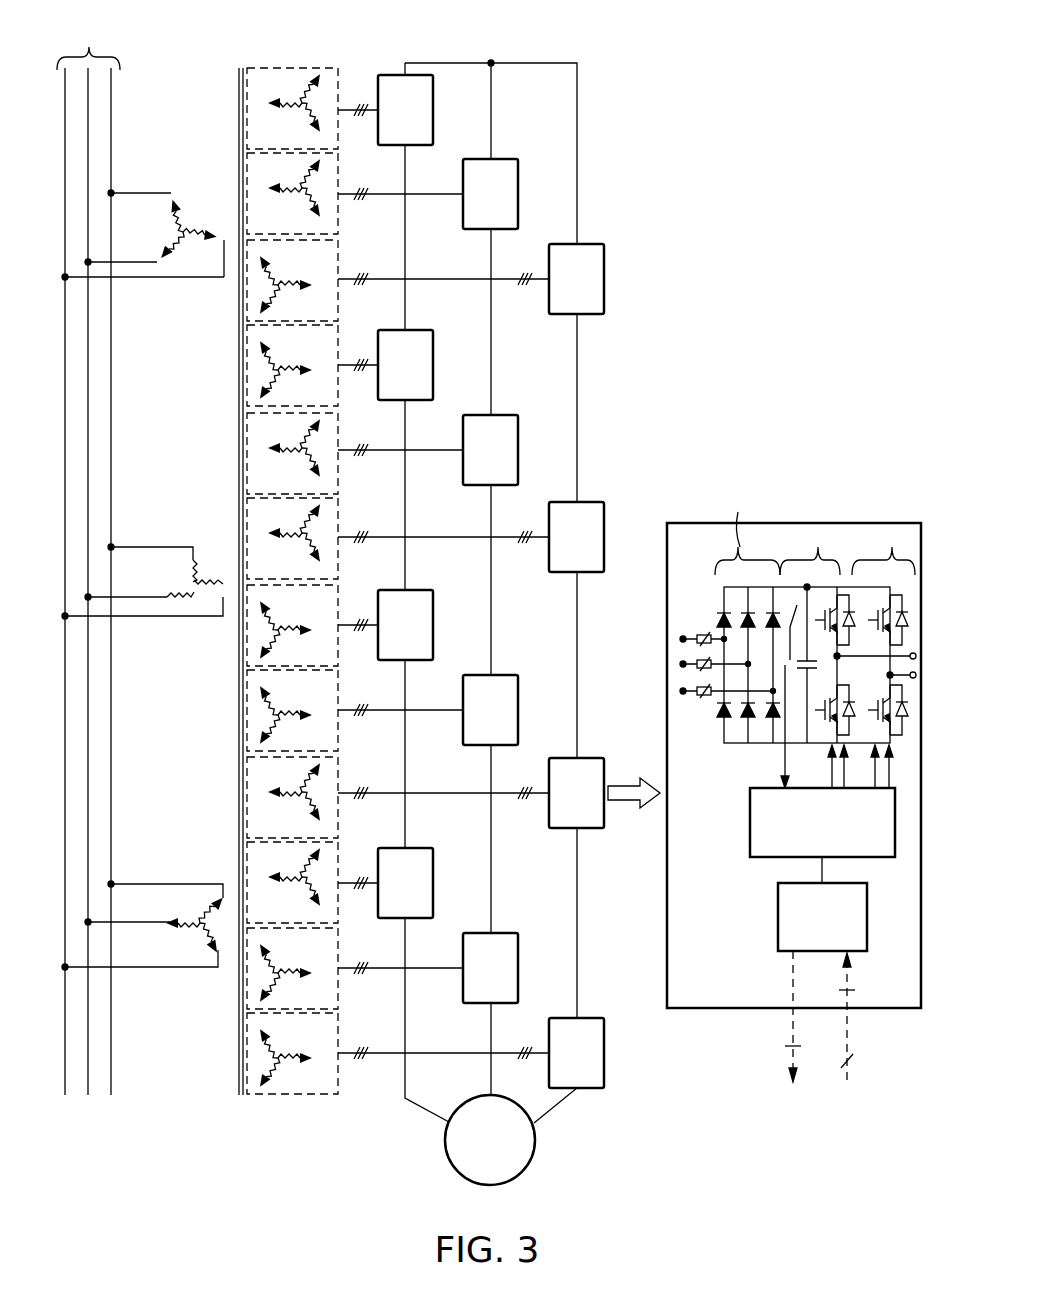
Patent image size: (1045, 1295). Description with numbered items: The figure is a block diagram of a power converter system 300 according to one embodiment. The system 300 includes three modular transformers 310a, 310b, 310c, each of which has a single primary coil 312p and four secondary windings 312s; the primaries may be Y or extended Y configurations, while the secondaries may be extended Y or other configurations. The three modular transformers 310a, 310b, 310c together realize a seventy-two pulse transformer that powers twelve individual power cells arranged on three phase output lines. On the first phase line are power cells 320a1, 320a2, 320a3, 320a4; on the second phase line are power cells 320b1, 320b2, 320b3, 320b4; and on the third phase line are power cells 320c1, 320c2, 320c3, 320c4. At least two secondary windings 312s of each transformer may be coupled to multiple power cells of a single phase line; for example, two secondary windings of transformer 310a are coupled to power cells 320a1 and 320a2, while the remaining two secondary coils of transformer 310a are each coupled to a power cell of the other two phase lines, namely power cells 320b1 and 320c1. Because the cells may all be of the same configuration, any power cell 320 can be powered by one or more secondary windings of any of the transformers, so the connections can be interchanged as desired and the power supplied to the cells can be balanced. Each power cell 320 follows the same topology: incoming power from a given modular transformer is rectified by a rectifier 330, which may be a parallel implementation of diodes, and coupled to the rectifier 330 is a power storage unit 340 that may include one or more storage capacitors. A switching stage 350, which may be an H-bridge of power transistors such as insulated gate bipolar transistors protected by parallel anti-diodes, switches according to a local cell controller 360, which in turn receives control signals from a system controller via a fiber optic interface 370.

The system 300 is at (192, 38).
The modular transformer 310a is at (148, 193).
The modular transformer 310b is at (180, 616).
The modular transformer 310c is at (188, 967).
The primary coil 312p is at (220, 278).
The secondary windings 312s is at (288, 68).
The power cell 320 is at (794, 818).
The power cell 320a1 is at (392, 74).
The power cell 320a2 is at (427, 330).
The power cell 320a3 is at (428, 590).
The power cell 320a4 is at (428, 848).
The power cell 320b1 is at (512, 159).
The power cell 320b2 is at (511, 415).
The power cell 320b3 is at (511, 675).
The power cell 320b4 is at (511, 933).
The power cell 320c1 is at (597, 244).
The power cell 320c2 is at (598, 502).
The power cell 320c3 is at (598, 758).
The power cell 320c4 is at (598, 1018).
The rectifier 330 is at (536, 1140).
The power storage unit 340 is at (818, 547).
The switching stage 350 is at (892, 547).
The local cell controller 360 is at (750, 822).
The fiber optic interface 370 is at (778, 917).